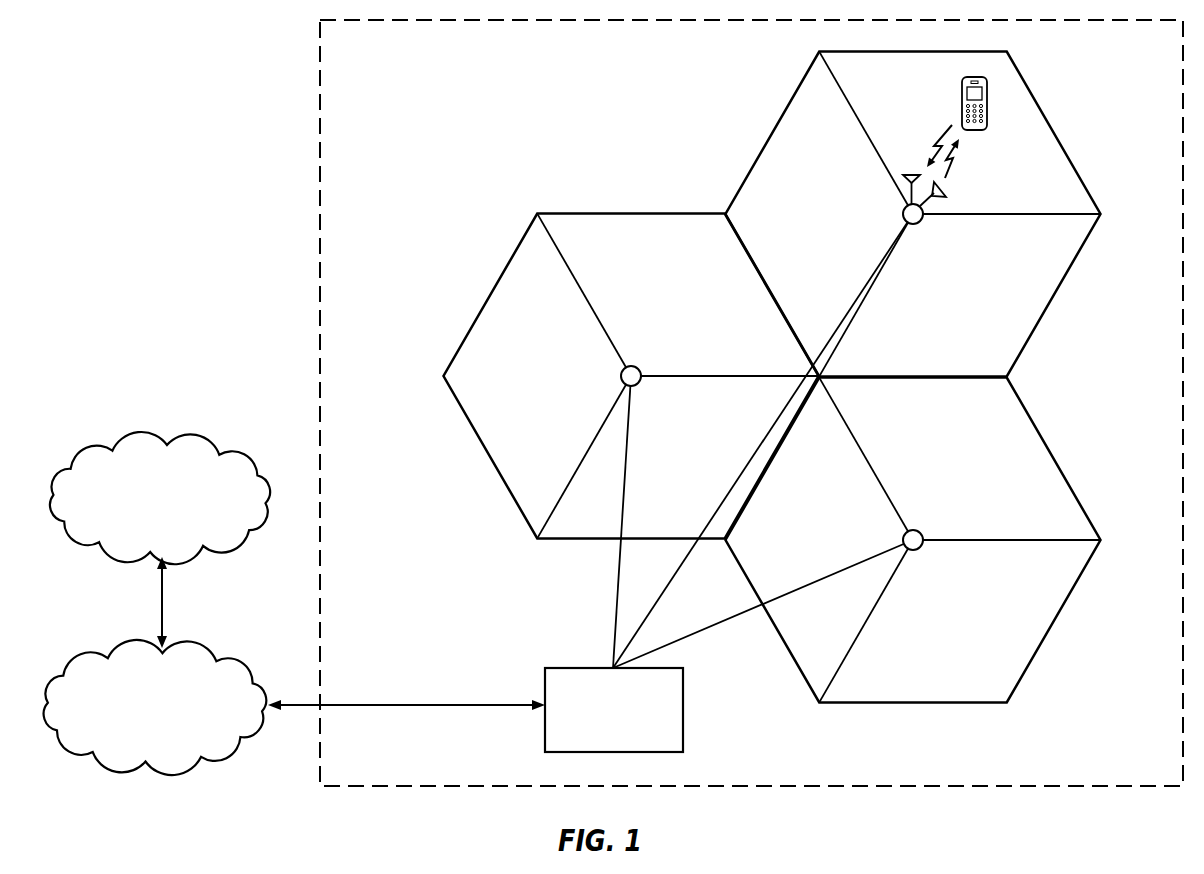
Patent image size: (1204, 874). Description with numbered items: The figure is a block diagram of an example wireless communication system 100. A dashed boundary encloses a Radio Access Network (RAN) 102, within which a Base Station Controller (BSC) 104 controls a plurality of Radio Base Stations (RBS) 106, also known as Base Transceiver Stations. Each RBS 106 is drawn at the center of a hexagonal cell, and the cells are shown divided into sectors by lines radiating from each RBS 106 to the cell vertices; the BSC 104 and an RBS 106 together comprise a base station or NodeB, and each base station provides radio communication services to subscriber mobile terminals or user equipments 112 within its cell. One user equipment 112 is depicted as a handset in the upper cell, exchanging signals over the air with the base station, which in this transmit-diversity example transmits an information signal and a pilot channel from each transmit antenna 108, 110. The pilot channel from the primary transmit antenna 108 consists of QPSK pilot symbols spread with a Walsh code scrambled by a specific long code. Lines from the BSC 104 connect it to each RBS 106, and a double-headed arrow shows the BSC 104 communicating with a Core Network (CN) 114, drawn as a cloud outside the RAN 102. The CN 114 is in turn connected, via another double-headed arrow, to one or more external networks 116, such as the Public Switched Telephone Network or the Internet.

The wireless communication system 100 is at (189, 197).
The Radio Access Network 102 is at (361, 84).
The Base Station Controller 104 is at (598, 733).
The Radio Base Station 106 is at (919, 221).
The primary transmit antenna 108 is at (912, 173).
The transmit antenna 110 is at (944, 196).
The user equipment 112 is at (977, 131).
The Core Network 114 is at (139, 729).
The external network 116 is at (143, 531).